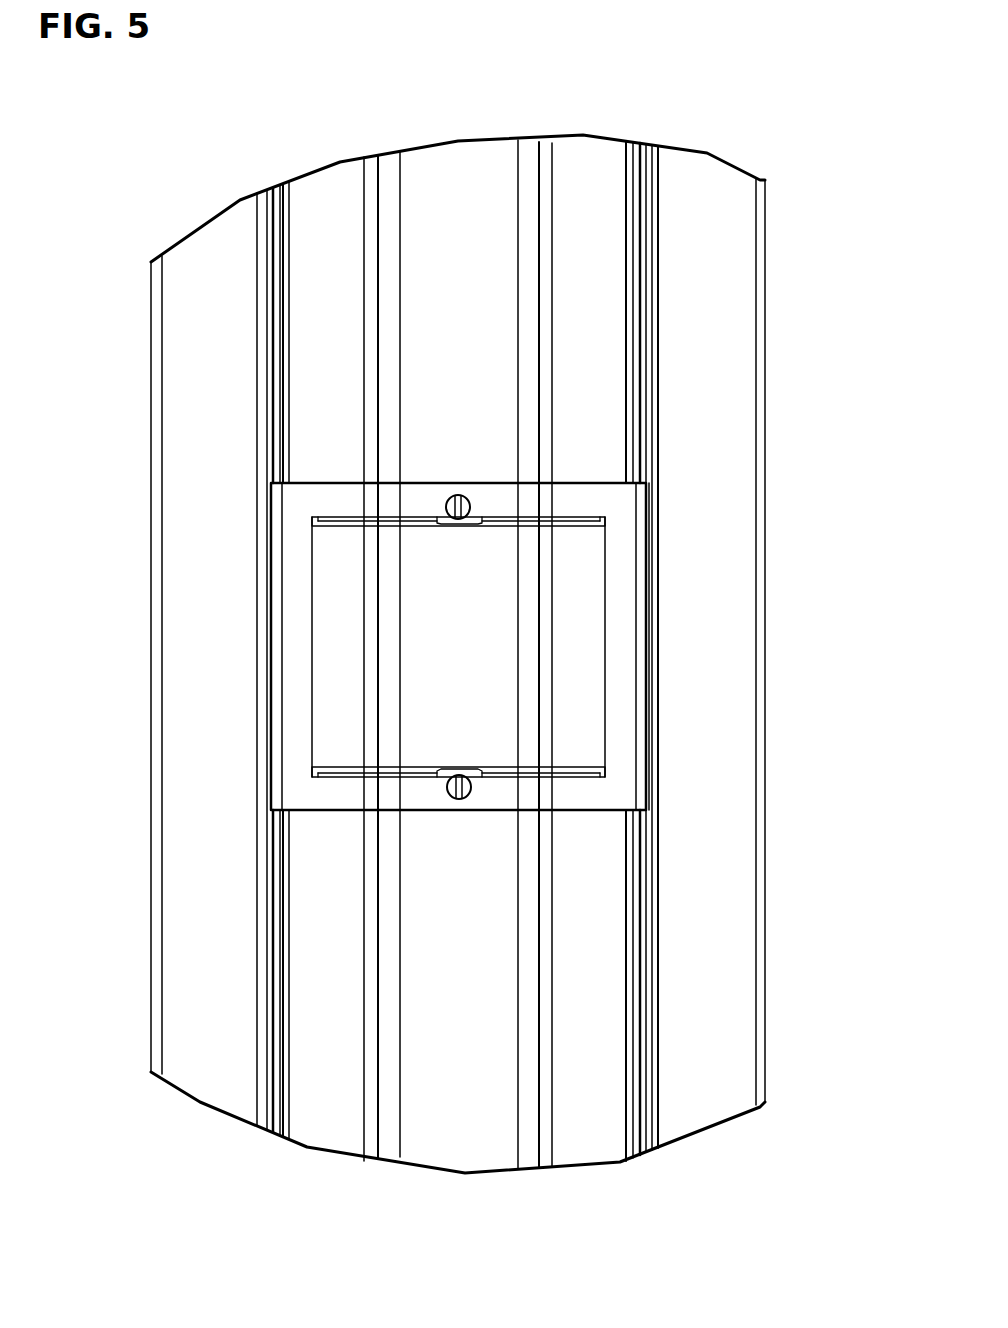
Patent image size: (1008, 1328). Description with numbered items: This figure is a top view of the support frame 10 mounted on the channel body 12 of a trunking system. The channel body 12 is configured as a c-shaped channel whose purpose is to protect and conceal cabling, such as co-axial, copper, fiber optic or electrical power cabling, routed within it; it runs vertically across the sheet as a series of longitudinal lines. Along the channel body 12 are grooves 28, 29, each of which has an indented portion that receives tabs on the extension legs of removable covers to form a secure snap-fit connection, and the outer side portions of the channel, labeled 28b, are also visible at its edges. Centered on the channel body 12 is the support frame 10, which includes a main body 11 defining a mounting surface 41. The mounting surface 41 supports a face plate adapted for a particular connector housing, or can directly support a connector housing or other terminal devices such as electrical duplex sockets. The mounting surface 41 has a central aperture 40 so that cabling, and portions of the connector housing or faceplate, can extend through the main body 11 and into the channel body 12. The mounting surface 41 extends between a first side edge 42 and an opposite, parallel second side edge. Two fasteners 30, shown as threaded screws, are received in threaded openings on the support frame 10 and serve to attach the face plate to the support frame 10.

The support frame 10 is at (495, 690).
The main body 11 is at (327, 812).
The channel body 12 is at (330, 1136).
The groove 28 is at (288, 447).
The side flange 28b is at (189, 668).
The groove 29 is at (638, 435).
The fastener 30 is at (452, 514).
The central aperture 40 is at (590, 722).
The mounting surface 41 is at (578, 793).
The first side edge 42 is at (430, 330).